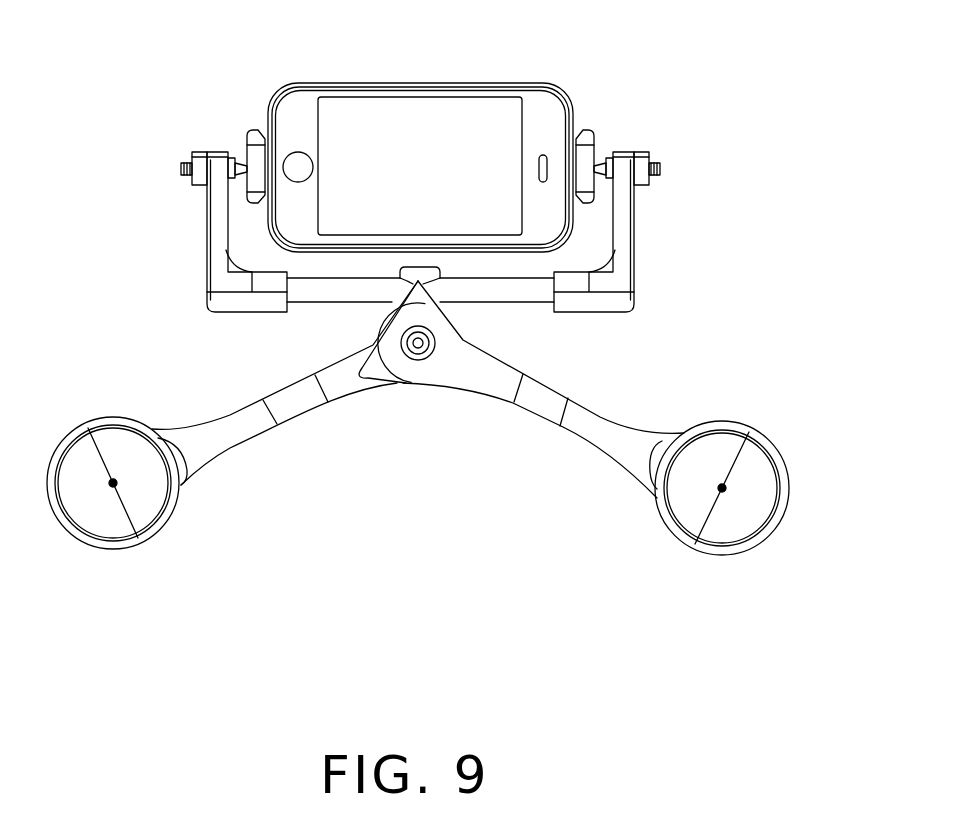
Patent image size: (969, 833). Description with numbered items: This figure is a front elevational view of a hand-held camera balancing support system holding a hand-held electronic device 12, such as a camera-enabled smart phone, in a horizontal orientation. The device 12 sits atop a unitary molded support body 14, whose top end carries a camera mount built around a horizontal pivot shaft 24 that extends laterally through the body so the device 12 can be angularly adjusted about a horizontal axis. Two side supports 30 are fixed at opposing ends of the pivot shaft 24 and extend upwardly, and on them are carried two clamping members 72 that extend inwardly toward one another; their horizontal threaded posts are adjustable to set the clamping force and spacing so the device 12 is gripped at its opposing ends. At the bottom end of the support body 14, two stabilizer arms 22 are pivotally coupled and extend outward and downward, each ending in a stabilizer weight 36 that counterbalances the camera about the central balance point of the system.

The hand-held electronic device 12 is at (411, 80).
The support body 14 is at (437, 292).
The stabilizer arms 22 is at (248, 418).
The horizontal pivot shaft 24 is at (327, 297).
The side supports 30 is at (217, 290).
The stabilizer weight 36 is at (133, 508).
The clamping members 72 is at (240, 106).